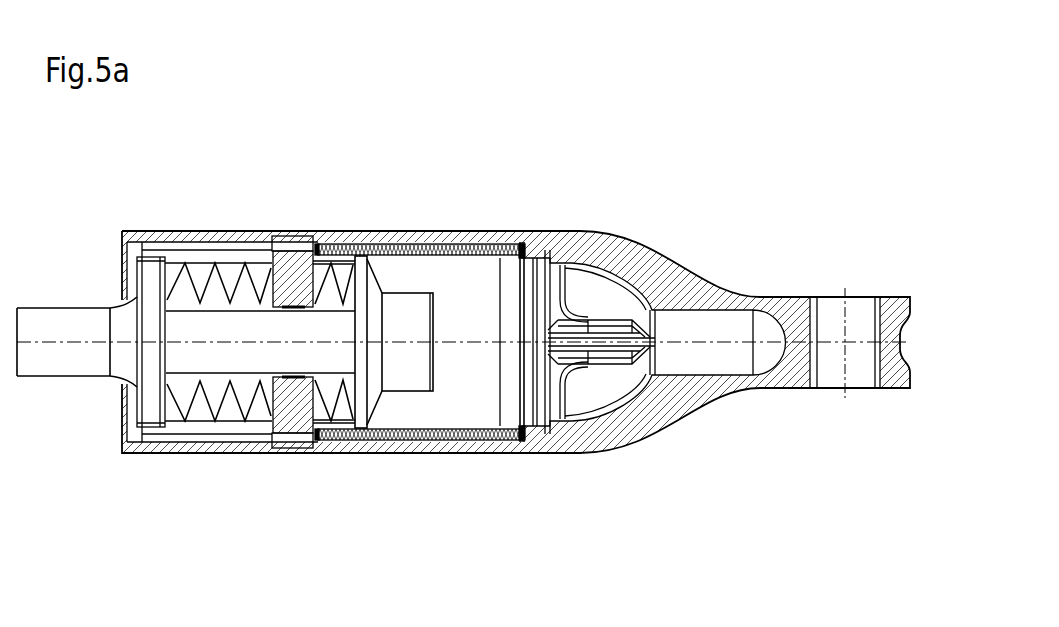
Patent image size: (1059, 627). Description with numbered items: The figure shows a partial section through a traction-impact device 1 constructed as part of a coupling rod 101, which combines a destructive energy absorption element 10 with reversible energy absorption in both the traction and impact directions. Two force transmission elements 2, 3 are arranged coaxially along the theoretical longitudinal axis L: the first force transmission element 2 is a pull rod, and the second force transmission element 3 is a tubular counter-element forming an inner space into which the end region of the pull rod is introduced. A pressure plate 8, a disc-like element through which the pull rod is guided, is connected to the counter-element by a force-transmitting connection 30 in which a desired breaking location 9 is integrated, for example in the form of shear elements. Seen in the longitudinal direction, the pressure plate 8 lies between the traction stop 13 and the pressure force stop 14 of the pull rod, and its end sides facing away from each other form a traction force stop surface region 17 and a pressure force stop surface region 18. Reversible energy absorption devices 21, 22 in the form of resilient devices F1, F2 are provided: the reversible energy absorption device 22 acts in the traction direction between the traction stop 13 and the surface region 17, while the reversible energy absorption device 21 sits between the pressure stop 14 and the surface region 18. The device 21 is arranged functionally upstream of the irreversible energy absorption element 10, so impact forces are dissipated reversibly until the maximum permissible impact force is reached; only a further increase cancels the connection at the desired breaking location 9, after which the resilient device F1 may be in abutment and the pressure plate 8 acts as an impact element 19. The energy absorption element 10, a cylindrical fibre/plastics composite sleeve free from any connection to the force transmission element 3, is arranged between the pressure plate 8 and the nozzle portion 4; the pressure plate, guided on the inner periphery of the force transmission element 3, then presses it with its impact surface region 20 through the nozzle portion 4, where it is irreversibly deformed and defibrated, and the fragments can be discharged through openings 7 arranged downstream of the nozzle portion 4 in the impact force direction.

The traction-impact device 1 is at (477, 200).
The coupling rod 101 is at (557, 192).
The first force transmission element 2 is at (43, 320).
The second force transmission element 3 is at (651, 246).
The nozzle portion 4 is at (545, 440).
The openings 7 is at (622, 383).
The pressure plate 8 is at (275, 448).
The impact element 19 is at (270, 425).
The desired breaking location 9 is at (287, 236).
The energy absorption element 10 is at (441, 434).
The traction stop 13 is at (350, 322).
The pressure force stop 14 is at (167, 394).
The traction force stop surface region 17 is at (335, 266).
The pressure force stop surface region 18 is at (248, 248).
The impact surface region 20 is at (317, 247).
The reversible energy absorption device 21 is at (207, 231).
The resilient device F1 is at (200, 272).
The reversible energy absorption device 22 is at (268, 450).
The resilient device F2 is at (347, 425).
The force-transmitting connection 30 is at (352, 302).
The longitudinal axis L is at (797, 342).